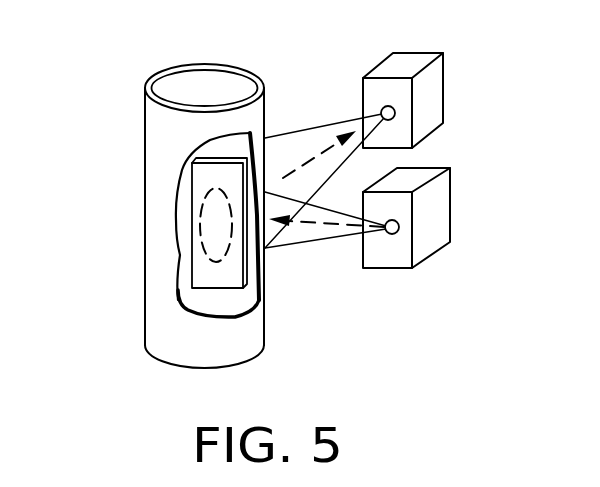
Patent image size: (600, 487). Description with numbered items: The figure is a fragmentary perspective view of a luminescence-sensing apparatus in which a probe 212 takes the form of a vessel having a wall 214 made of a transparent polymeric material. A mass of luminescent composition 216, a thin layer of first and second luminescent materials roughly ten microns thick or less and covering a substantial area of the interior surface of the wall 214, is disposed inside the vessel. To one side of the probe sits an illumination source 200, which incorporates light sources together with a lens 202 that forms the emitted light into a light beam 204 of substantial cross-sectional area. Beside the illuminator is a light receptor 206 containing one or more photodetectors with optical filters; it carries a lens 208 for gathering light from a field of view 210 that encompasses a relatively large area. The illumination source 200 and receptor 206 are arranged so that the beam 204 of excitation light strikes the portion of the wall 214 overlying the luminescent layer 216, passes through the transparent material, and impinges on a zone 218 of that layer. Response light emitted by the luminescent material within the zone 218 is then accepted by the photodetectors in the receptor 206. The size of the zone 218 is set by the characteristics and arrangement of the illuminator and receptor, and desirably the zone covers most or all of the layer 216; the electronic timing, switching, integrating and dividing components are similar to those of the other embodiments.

The illumination source 200 is at (395, 280).
The lens 202 is at (389, 235).
The light beam 204 is at (293, 250).
The light receptor 206 is at (396, 46).
The lens 208 is at (382, 108).
The field of view 210 is at (282, 131).
The probe 212 is at (132, 200).
The wall 214 is at (160, 147).
The mass of luminescent composition 216 is at (205, 295).
The zone 218 is at (212, 223).